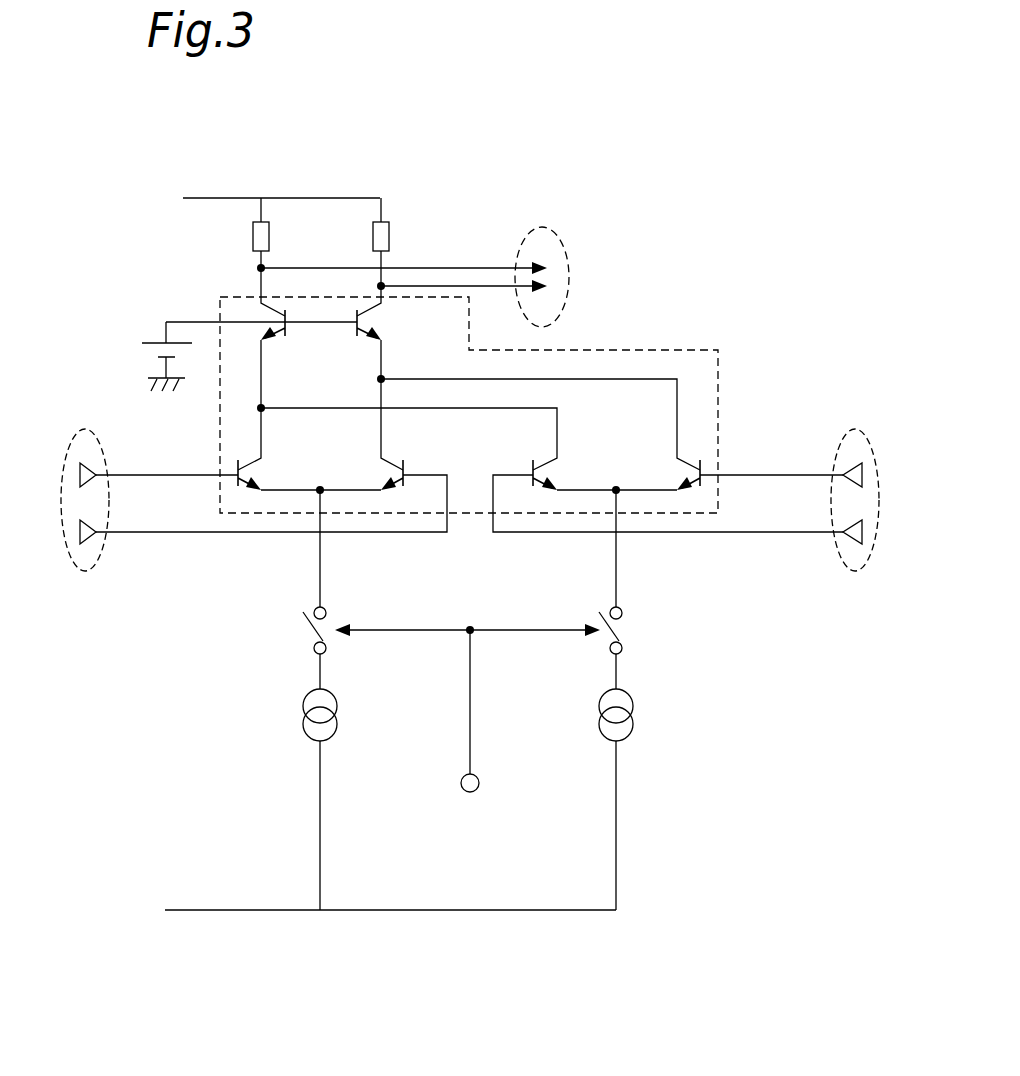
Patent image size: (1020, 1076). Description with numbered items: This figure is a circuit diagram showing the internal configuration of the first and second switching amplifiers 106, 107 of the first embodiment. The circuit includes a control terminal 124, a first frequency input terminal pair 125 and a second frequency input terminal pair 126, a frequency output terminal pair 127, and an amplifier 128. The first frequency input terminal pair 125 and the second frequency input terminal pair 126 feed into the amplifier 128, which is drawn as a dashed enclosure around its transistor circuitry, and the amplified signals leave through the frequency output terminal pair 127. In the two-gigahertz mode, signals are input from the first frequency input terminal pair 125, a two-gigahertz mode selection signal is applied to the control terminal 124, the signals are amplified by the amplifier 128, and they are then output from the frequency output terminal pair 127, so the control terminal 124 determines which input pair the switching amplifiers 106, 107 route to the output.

The first switching amplifier 106 is at (855, 146).
The second switching amplifier 107 is at (469, 501).
The control terminal 124 is at (470, 792).
The first frequency input terminal pair 125 is at (86, 572).
The second frequency input terminal pair 126 is at (855, 572).
The frequency output terminal pair 127 is at (541, 226).
The amplifier 128 is at (719, 378).